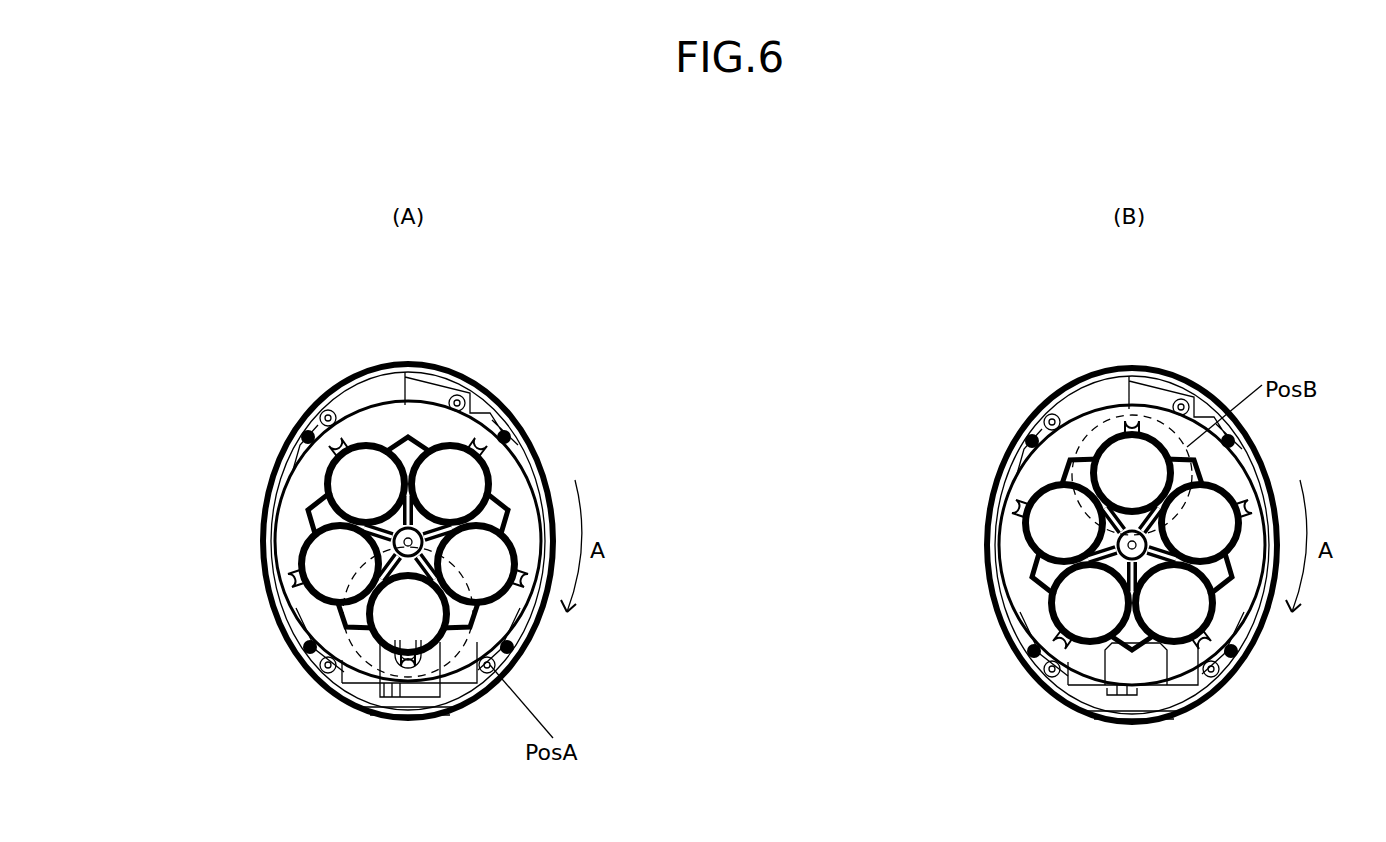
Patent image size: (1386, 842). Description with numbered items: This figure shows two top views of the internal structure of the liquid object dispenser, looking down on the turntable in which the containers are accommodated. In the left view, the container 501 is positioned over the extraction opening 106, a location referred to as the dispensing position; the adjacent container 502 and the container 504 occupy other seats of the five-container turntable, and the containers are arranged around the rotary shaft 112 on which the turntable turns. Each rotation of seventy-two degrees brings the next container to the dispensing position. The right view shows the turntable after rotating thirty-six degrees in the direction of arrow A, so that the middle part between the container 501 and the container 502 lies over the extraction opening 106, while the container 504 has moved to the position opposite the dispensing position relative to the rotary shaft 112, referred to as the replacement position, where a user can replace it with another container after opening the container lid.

The rotary shaft 112 is at (398, 536).
The container 504 is at (362, 486).
The container 501 is at (408, 612).
The container 502 is at (477, 563).
The extraction opening 106 is at (440, 680).